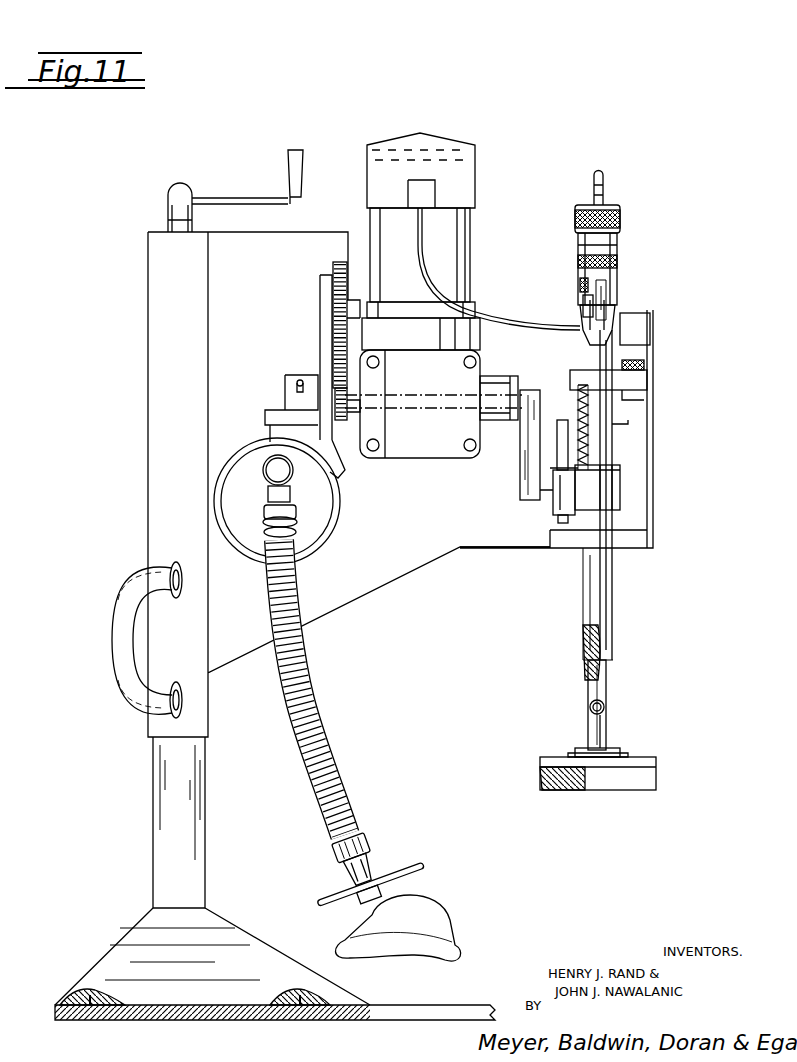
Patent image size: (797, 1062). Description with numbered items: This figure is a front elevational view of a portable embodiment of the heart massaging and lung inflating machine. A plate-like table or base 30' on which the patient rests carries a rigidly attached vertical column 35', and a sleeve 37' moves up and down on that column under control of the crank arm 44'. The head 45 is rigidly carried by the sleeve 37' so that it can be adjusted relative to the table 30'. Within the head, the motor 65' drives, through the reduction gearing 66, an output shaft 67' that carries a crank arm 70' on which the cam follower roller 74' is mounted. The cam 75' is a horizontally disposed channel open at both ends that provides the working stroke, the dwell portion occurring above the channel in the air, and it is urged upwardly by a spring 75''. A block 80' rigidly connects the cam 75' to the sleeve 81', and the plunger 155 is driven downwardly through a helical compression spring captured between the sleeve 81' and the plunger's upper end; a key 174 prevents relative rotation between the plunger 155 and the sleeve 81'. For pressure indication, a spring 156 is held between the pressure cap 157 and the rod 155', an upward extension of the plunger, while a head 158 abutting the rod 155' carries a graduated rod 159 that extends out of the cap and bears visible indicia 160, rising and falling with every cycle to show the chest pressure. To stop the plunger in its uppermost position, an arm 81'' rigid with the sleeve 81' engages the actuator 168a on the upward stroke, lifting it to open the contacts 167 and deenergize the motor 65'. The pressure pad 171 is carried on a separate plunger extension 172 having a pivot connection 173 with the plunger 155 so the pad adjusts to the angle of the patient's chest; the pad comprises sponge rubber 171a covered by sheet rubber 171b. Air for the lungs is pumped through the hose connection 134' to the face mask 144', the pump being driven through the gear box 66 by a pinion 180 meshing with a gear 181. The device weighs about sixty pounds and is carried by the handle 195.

The table or base 30' is at (275, 1016).
The vertical column 35' is at (212, 871).
The sleeve 37' is at (324, 484).
The crank arm 44' is at (235, 191).
The head 45 is at (432, 570).
The motor 65' is at (471, 241).
The reduction gearing 66 is at (433, 379).
The output shaft 67' is at (516, 382).
The crank arm 70' is at (506, 445).
The cam follower roller 74' is at (540, 472).
The cam 75' is at (535, 528).
The spring 75'' is at (565, 427).
The block 80' is at (629, 487).
The sleeve 81' is at (619, 495).
The arm 81'' is at (650, 430).
The hose connection 134' is at (316, 645).
The face mask 144' is at (400, 889).
The plunger 155 is at (626, 705).
The rod 155' is at (640, 313).
The spring 156 is at (612, 290).
The pressure cap 157 is at (618, 222).
The head 158 is at (583, 312).
The rod 159 is at (579, 285).
The visible indicia 160 is at (603, 190).
The contacts 167 is at (630, 372).
The actuator 168a is at (640, 396).
The pressure pad 171 is at (640, 776).
The sponge rubber 171a is at (560, 760).
The covering of sheet rubber 171b is at (540, 778).
The plunger extension 172 is at (602, 724).
The pivot connection 173 is at (590, 707).
The key 174 is at (583, 652).
The pinion 180 is at (345, 400).
The gear 181 is at (333, 270).
The handle 195 is at (122, 638).